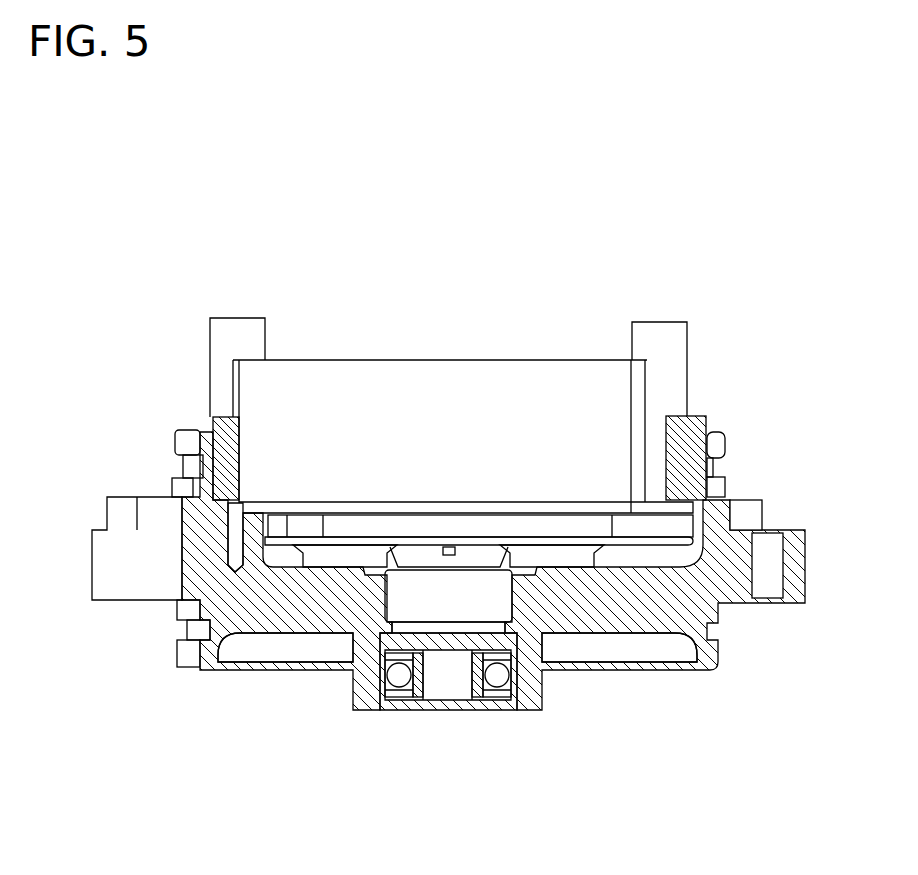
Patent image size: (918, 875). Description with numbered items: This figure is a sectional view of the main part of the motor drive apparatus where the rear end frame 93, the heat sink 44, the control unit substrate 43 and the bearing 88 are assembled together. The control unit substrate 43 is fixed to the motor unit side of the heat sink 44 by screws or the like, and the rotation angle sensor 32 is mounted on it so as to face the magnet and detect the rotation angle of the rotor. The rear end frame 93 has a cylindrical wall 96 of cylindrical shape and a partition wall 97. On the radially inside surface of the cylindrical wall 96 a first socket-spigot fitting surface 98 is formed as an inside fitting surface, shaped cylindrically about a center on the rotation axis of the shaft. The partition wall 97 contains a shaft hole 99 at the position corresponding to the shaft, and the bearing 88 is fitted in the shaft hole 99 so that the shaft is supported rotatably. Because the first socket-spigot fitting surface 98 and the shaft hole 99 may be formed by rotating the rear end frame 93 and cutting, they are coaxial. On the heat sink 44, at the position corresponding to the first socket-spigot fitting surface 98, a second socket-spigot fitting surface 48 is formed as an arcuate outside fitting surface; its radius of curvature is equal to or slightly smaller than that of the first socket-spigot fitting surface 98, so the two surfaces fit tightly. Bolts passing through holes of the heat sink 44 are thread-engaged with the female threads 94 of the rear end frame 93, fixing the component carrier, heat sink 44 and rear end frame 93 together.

The rotation angle sensor 32 is at (450, 548).
The control unit substrate 43 is at (712, 627).
The heat sink 44 is at (456, 382).
The second socket-spigot fitting surface 48 is at (207, 420).
The bearing 88 is at (398, 712).
The rear end frame 93 is at (120, 570).
The female thread 94 is at (235, 545).
The cylindrical wall 96 is at (172, 445).
The partition wall 97 is at (290, 610).
The first socket-spigot fitting surface 98 is at (170, 487).
The shaft hole 99 is at (457, 712).